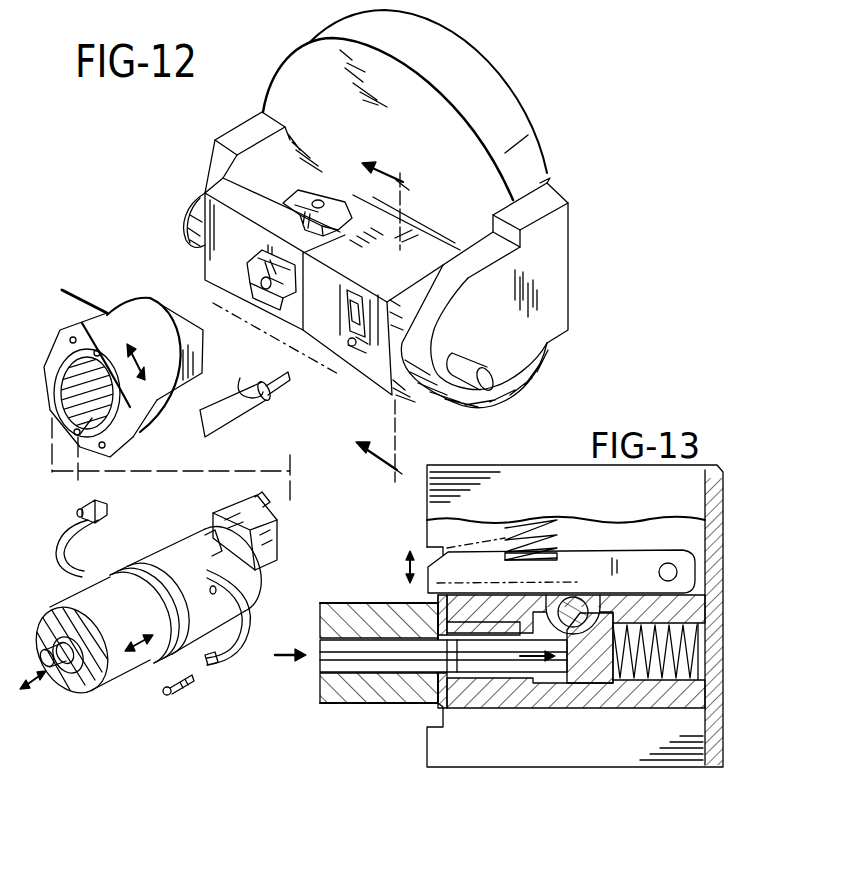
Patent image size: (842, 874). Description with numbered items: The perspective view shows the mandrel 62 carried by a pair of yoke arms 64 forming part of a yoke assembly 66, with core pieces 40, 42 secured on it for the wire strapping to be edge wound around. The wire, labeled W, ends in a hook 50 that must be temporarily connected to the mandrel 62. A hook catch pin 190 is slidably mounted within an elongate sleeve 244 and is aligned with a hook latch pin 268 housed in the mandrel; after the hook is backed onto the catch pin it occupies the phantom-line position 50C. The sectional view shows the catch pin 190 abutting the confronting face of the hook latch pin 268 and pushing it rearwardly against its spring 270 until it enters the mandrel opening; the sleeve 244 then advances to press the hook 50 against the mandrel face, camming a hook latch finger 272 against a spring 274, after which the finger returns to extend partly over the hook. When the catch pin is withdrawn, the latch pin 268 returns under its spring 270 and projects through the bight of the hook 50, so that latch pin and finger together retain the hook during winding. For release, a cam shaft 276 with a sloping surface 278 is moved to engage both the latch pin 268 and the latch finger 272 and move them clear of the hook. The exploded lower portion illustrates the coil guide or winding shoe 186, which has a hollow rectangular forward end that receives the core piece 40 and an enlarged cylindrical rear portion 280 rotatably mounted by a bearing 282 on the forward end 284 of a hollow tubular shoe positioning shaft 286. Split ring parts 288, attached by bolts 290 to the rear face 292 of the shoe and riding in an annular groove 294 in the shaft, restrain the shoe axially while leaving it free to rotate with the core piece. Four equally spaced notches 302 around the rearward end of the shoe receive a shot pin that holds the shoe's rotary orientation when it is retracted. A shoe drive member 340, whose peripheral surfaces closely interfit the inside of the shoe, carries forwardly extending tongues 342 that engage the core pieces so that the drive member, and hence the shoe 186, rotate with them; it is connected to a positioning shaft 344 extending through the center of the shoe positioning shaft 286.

In FIG. 12, the yoke assembly 66 is at (465, 76).
In FIG. 12, the yoke arms 64 is at (213, 150).
In FIG. 12, the mandrel 62 is at (198, 198).
In FIG. 13, the mandrel 62 is at (537, 458).
In FIG. 12, the core piece 42 is at (290, 200).
In FIG. 12, the core piece 40 is at (250, 270).
In FIG. 12, the hook latch finger 272 is at (370, 307).
In FIG. 13, the hook latch finger 272 is at (622, 556).
In FIG. 12, the hook latch pin 268 is at (352, 348).
In FIG. 13, the hook latch pin 268 is at (602, 682).
In FIG. 12, the hook catch pin 190 is at (272, 391).
In FIG. 13, the hook catch pin 190 is at (362, 643).
In FIG. 12, the elongate sleeve 244 is at (258, 408).
In FIG. 13, the elongate sleeve 244 is at (355, 697).
In FIG. 12, the phantom-line hook position 50C is at (240, 378).
In FIG. 12, the workpiece direction W is at (78, 292).
In FIG. 12, the notches 302 is at (107, 320).
In FIG. 12, the rear face of the shoe 292 is at (58, 342).
In FIG. 12, the winding shoe 186 is at (167, 308).
In FIG. 12, the cylindrical rear portion 280 is at (160, 338).
In FIG. 12, the split ring parts 288 is at (62, 522).
In FIG. 12, the bearing 282 is at (91, 499).
In FIG. 12, the forward end of shoe positioning shaft 284 is at (173, 527).
In FIG. 12, the annular groove 294 is at (133, 553).
In FIG. 12, the tongues 342 is at (253, 500).
In FIG. 12, the shoe drive member 340 is at (275, 530).
In FIG. 12, the shoe positioning shaft 286 is at (80, 600).
In FIG. 12, the positioning shaft 344 is at (67, 678).
In FIG. 12, the bolts 290 is at (188, 688).
In FIG. 13, the spring 274 is at (531, 520).
In FIG. 13, the sloping surface 278 is at (553, 594).
In FIG. 13, the spring 270 is at (699, 645).
In FIG. 13, the cam shaft 276 is at (572, 668).
In FIG. 13, the hook 50 is at (438, 708).